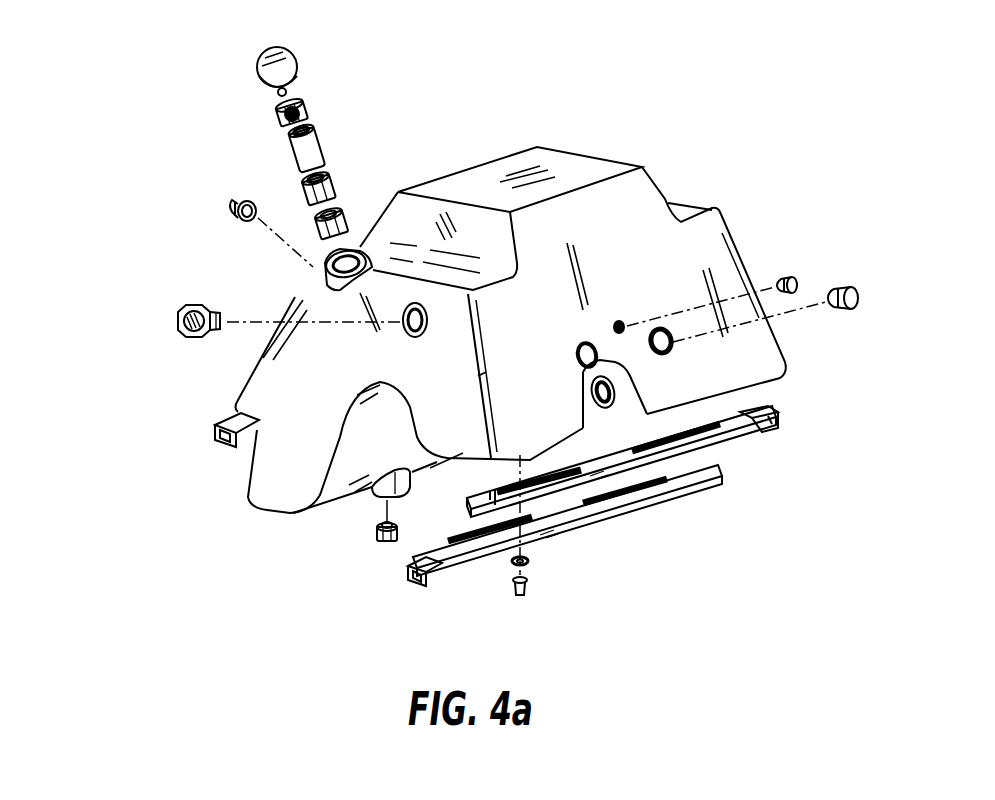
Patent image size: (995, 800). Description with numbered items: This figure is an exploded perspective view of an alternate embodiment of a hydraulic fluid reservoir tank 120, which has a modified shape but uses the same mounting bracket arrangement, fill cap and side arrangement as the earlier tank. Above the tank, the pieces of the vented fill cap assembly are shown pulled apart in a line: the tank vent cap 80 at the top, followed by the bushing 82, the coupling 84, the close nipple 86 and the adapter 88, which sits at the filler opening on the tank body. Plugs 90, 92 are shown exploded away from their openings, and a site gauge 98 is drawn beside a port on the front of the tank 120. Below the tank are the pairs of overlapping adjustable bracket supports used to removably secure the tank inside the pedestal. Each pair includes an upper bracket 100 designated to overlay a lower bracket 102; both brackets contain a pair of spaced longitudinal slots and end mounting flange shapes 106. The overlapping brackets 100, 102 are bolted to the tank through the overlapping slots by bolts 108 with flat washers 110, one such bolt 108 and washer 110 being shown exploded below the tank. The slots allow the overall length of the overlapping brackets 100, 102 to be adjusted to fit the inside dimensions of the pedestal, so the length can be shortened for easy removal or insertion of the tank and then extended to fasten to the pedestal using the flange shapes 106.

The tank vent cap 80 is at (297, 68).
The bushing 82 is at (304, 110).
The coupling 84 is at (320, 152).
The close nipple 86 is at (335, 213).
The adapter 88 is at (330, 248).
The plug 90 is at (233, 197).
The plug 92 is at (375, 538).
The site gauge 98 is at (183, 307).
The upper bracket 100 is at (222, 412).
The lower bracket 102 is at (682, 477).
The end mounting flange shape 106 is at (777, 425).
The bolt 108 is at (512, 590).
The flat washer 110 is at (533, 562).
The hydraulic fluid reservoir tank 120 is at (571, 149).